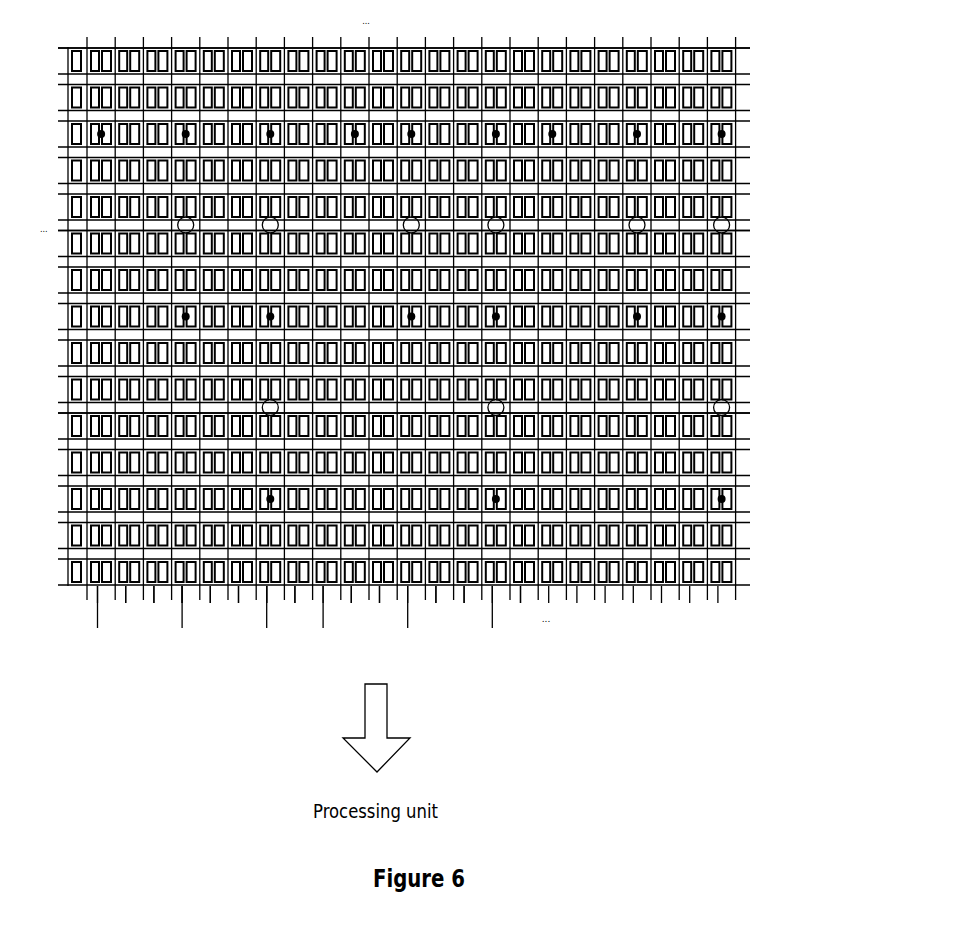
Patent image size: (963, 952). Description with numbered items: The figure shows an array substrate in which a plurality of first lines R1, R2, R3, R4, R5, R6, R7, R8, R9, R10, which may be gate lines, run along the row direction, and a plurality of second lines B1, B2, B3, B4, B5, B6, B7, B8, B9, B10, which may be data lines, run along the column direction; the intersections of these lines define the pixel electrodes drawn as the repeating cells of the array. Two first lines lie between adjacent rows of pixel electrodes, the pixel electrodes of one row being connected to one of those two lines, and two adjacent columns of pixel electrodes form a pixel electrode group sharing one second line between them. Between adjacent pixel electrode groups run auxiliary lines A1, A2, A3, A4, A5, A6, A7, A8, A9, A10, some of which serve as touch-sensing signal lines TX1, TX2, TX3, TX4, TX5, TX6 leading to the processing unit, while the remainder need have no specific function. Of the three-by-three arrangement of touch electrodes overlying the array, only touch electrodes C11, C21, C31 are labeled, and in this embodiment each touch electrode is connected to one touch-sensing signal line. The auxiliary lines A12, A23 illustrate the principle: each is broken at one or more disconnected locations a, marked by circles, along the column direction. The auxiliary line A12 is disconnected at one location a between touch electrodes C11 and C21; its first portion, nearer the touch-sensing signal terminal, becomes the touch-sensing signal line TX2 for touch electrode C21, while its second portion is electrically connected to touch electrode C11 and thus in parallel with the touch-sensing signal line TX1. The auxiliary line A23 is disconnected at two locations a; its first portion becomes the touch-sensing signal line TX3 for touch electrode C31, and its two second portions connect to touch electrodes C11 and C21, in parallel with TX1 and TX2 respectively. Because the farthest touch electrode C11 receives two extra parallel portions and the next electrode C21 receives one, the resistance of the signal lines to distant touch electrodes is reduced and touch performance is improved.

The touch electrode C11 is at (68, 47).
The touch electrode C21 is at (68, 246).
The touch electrode C31 is at (68, 427).
The first line R1 is at (394, 48).
The first line R2 is at (394, 74).
The first line R3 is at (394, 85).
The first line R4 is at (394, 111).
The first line R5 is at (394, 121).
The first line R6 is at (394, 147).
The first line R7 is at (394, 157).
The first line R8 is at (394, 184).
The first line R9 is at (394, 194).
The first line R10 is at (394, 220).
The second line B1 is at (87, 308).
The second line B2 is at (115, 308).
The second line B3 is at (143, 308).
The second line B4 is at (171, 308).
The second line B5 is at (200, 308).
The second line B6 is at (228, 308).
The second line B7 is at (256, 308).
The second line B8 is at (284, 308).
The second line B9 is at (312, 308).
The second line B10 is at (341, 308).
The touch-sensing signal line TX1 is at (97, 613).
The touch-sensing signal line TX2 is at (181, 613).
The touch-sensing signal line TX3 is at (266, 613).
The touch-sensing signal line TX4 is at (322, 613).
The touch-sensing signal line TX5 is at (407, 613).
The touch-sensing signal line TX6 is at (492, 613).
The auxiliary line A1 is at (126, 605).
The auxiliary line A2 is at (154, 605).
The auxiliary line A3 is at (210, 605).
The auxiliary line A4 is at (239, 605).
The auxiliary line A5 is at (295, 605).
The auxiliary line A6 is at (351, 605).
The auxiliary line A7 is at (380, 605).
The auxiliary line A8 is at (436, 605).
The auxiliary line A9 is at (464, 605).
The auxiliary line A10 is at (521, 605).
The auxiliary line A12 is at (182, 650).
The auxiliary line A23 is at (267, 650).
The disconnected location a is at (788, 389).